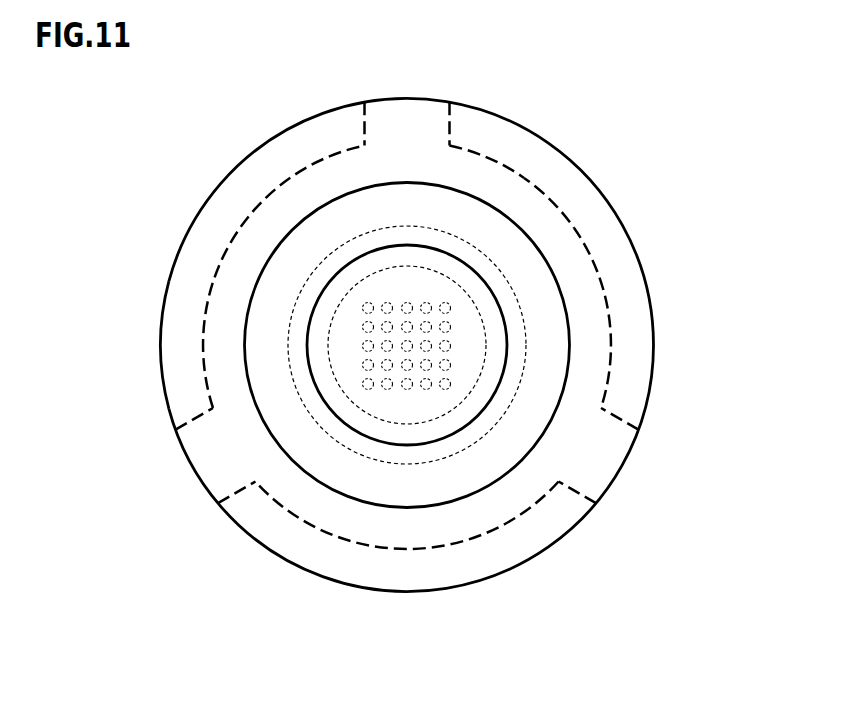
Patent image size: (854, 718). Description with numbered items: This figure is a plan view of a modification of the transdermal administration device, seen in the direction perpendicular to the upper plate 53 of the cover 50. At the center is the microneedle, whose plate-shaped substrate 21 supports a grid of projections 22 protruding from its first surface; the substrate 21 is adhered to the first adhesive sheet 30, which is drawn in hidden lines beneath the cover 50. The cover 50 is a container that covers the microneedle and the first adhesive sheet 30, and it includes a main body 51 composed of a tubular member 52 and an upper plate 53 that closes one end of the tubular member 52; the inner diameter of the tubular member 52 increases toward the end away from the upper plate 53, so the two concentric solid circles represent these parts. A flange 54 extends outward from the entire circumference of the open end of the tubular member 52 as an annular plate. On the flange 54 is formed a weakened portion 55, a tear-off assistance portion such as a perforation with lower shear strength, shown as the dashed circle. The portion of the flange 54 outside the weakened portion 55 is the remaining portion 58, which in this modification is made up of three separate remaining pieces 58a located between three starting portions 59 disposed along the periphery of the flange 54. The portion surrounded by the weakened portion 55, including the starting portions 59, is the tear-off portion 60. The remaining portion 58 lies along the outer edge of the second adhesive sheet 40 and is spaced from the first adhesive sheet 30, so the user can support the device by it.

The substrate 21 is at (398, 423).
The projection 22 is at (428, 390).
The first adhesive sheet 30 is at (328, 432).
The second adhesive sheet 40 is at (158, 325).
The cover 50 is at (171, 265).
The main body 51 is at (716, 305).
The tubular member 52 is at (570, 313).
The upper plate 53 is at (508, 358).
The flange 54 is at (170, 387).
The weakened portion 55 is at (513, 168).
The remaining portion 58 is at (415, 373).
The remaining piece 58a is at (237, 178).
The starting portion 59 is at (402, 112).
The tear-off portion 60 is at (548, 207).